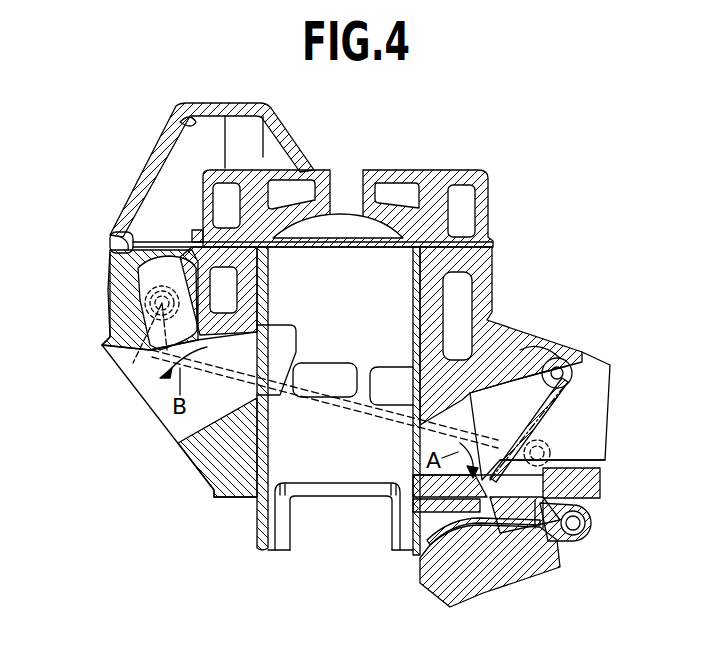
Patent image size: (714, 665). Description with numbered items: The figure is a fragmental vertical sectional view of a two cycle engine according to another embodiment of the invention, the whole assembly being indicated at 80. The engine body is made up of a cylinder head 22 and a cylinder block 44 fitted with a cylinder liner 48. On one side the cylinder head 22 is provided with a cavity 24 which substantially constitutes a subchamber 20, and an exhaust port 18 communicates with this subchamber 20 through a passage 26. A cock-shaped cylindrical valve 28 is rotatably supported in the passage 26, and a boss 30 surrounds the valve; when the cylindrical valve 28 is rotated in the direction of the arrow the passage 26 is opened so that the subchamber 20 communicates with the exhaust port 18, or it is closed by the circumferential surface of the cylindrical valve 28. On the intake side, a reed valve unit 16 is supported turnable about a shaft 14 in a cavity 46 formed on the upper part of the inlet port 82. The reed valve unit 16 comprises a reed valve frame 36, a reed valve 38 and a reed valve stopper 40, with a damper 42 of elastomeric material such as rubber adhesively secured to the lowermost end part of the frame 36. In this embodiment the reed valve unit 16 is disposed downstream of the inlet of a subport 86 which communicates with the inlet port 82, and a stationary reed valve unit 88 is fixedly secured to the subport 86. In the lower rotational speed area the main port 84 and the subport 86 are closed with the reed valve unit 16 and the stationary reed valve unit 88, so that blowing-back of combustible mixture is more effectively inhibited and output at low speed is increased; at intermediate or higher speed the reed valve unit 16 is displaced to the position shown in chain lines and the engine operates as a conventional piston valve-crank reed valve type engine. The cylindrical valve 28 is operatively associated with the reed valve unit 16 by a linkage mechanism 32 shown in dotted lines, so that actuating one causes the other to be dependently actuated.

The shaft 14 is at (556, 378).
The reed valve unit 16 is at (552, 406).
The exhaust port 18 is at (188, 440).
The subchamber 20 is at (178, 123).
The cylinder head 22 is at (437, 175).
The cavity 24 is at (157, 183).
The passage 26 is at (122, 233).
The cylindrical valve 28 is at (140, 312).
The boss 30 is at (110, 290).
The linkage mechanism 32 is at (357, 412).
The reed valve frame 36 is at (556, 455).
The reed valve 38 is at (485, 475).
The reed valve stopper 40 is at (490, 437).
The damper 42 is at (557, 540).
The cylinder block 44 is at (492, 343).
The cavity 46 is at (522, 349).
The cylinder liner 48 is at (263, 462).
The assembly 80 is at (520, 193).
The inlet port 82 is at (572, 433).
The main port 84 is at (600, 463).
The subport 86 is at (563, 490).
The stationary reed valve unit 88 is at (477, 533).